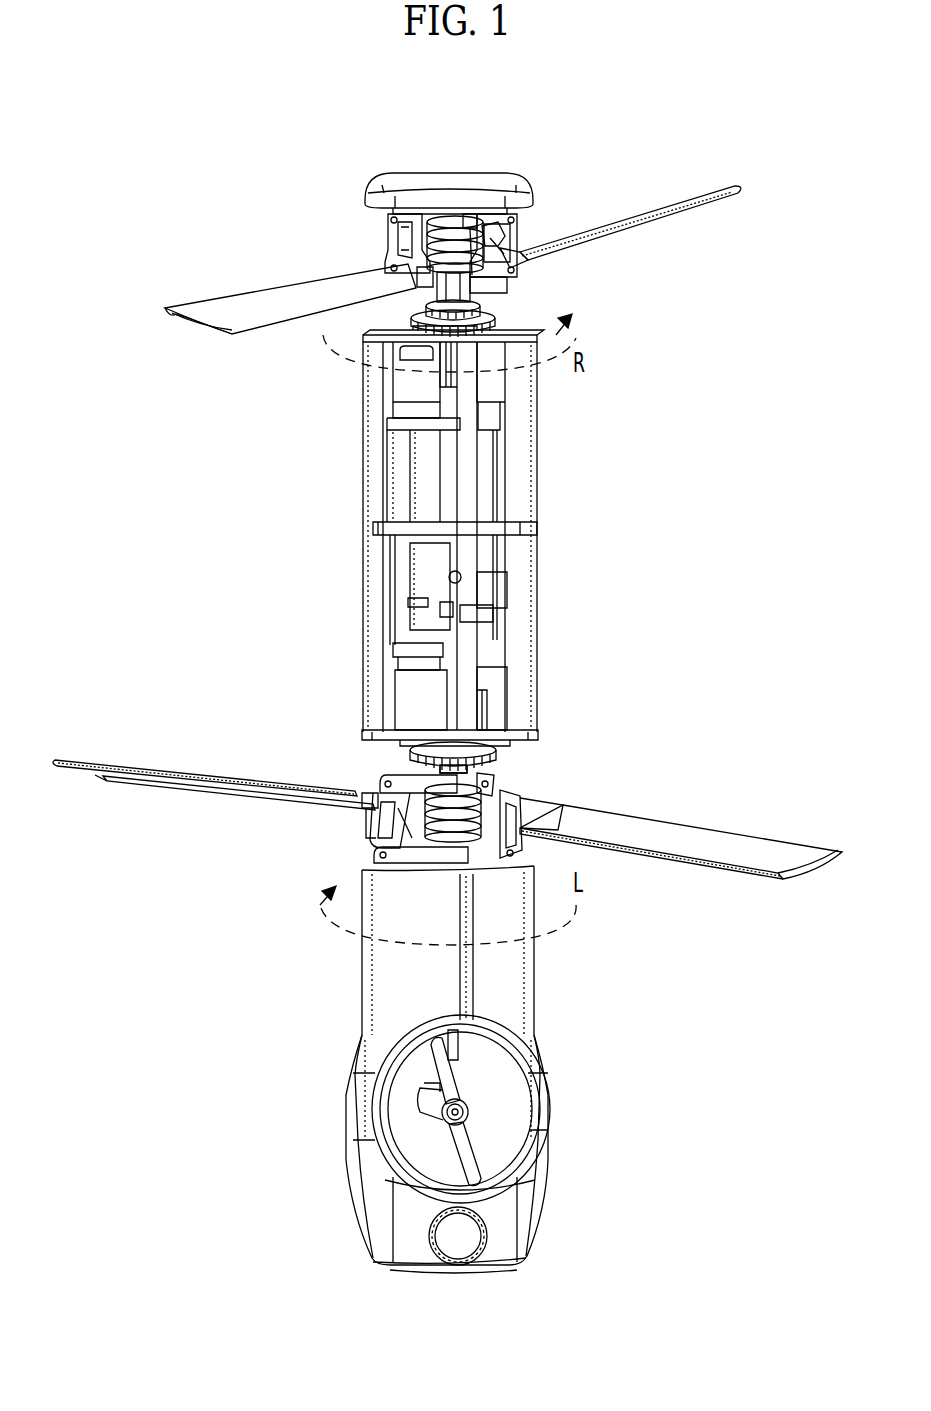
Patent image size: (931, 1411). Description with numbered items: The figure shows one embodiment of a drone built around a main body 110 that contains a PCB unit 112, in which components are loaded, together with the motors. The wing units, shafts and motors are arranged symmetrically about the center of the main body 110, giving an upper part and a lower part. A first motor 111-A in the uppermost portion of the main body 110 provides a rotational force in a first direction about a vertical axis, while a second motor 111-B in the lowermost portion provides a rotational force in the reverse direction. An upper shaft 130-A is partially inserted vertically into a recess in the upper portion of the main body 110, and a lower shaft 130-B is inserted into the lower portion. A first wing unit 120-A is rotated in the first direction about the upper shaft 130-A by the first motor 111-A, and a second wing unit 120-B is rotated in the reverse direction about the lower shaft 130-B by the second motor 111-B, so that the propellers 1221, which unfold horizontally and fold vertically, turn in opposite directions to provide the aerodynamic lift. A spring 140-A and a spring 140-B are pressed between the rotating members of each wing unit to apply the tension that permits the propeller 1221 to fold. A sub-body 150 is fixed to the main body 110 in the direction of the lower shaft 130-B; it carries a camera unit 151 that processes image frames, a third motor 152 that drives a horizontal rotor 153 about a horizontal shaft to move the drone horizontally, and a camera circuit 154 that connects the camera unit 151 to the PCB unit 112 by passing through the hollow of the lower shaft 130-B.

The first wing unit 120-A is at (382, 236).
The propeller 1221 is at (215, 312).
The spring 140-A is at (470, 245).
The upper shaft 130-A is at (455, 286).
The first motor 111-A is at (490, 415).
The main body 110 is at (375, 495).
The PCB unit 112 is at (432, 562).
The second motor 111-B is at (425, 700).
The second wing unit 120-B is at (376, 757).
The lower shaft 130-B is at (470, 788).
The spring 140-B is at (372, 832).
The sub-body 150 is at (515, 975).
The third motor 152 is at (452, 918).
The horizontal rotor 153 is at (472, 1155).
The camera unit 151 is at (470, 1237).
The camera circuit 154 is at (495, 1240).